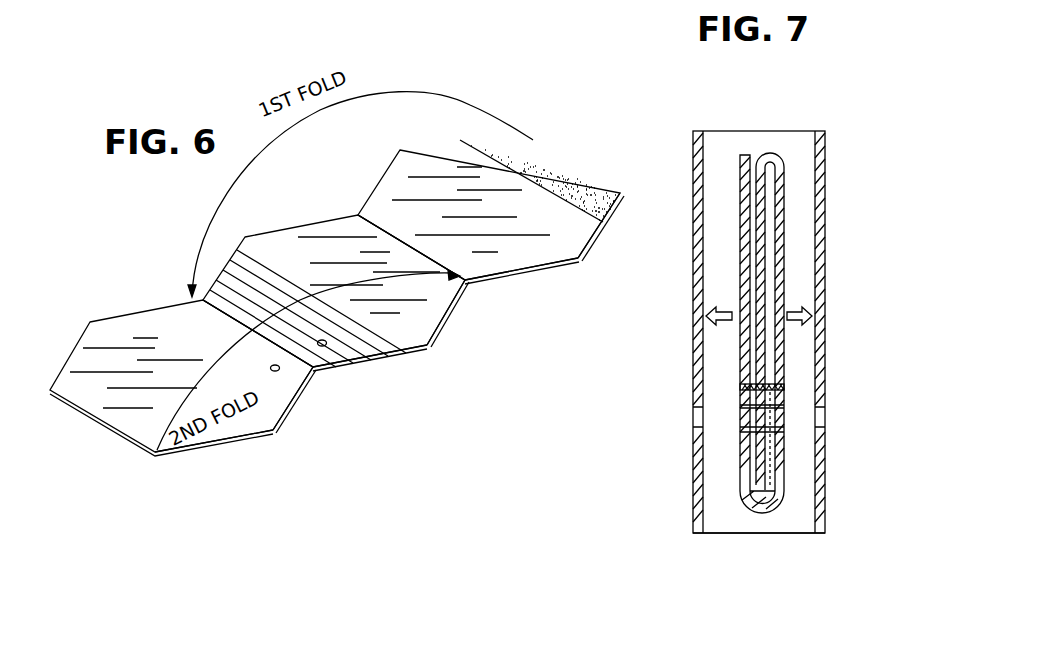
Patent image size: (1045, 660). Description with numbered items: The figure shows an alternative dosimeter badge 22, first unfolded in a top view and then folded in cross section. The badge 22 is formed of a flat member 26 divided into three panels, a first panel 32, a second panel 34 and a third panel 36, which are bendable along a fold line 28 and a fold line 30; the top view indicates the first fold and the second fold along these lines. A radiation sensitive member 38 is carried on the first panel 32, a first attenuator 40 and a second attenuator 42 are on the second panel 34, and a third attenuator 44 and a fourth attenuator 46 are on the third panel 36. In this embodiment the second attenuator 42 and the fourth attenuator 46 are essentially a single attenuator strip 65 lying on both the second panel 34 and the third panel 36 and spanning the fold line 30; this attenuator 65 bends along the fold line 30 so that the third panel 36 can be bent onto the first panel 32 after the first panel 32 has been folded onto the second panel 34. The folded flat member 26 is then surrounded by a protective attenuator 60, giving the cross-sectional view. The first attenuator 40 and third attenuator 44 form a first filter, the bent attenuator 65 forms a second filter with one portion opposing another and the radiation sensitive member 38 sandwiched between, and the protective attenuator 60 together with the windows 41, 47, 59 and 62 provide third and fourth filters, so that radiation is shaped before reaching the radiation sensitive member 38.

In FIG. 6, the badge 22 is at (478, 385).
In FIG. 7, the badge 22 is at (759, 571).
In FIG. 6, the flat member 26 is at (585, 276).
In FIG. 7, the flat member 26 is at (782, 128).
In FIG. 6, the fold line 28 is at (380, 227).
In FIG. 6, the fold line 30 is at (314, 369).
In FIG. 6, the first panel 32 is at (533, 250).
In FIG. 7, the first panel 32 is at (768, 257).
In FIG. 6, the second panel 34 is at (433, 318).
In FIG. 7, the second panel 34 is at (788, 205).
In FIG. 6, the third panel 36 is at (244, 422).
In FIG. 7, the third panel 36 is at (738, 179).
In FIG. 6, the radiation sensitive member 38 is at (523, 150).
In FIG. 7, the radiation sensitive member 38 is at (780, 500).
In FIG. 6, the first attenuator 40 is at (360, 347).
In FIG. 7, the first attenuator 40 is at (777, 386).
In FIG. 6, the window 41 is at (315, 340).
In FIG. 7, the window 41 is at (782, 418).
In FIG. 6, the second attenuator 42 is at (326, 348).
In FIG. 7, the second attenuator 42 is at (782, 438).
In FIG. 6, the third attenuator 44 is at (291, 396).
In FIG. 7, the third attenuator 44 is at (745, 387).
In FIG. 6, the fourth attenuator 46 is at (197, 308).
In FIG. 7, the fourth attenuator 46 is at (750, 467).
In FIG. 6, the window 47 is at (276, 372).
In FIG. 7, the window 47 is at (745, 415).
In FIG. 7, the window 59 is at (760, 428).
In FIG. 7, the protective attenuator 60 is at (826, 142).
In FIG. 7, the window 62 is at (697, 416).
In FIG. 6, the attenuator strip 65 is at (203, 290).
In FIG. 7, the attenuator strip 65 is at (780, 463).